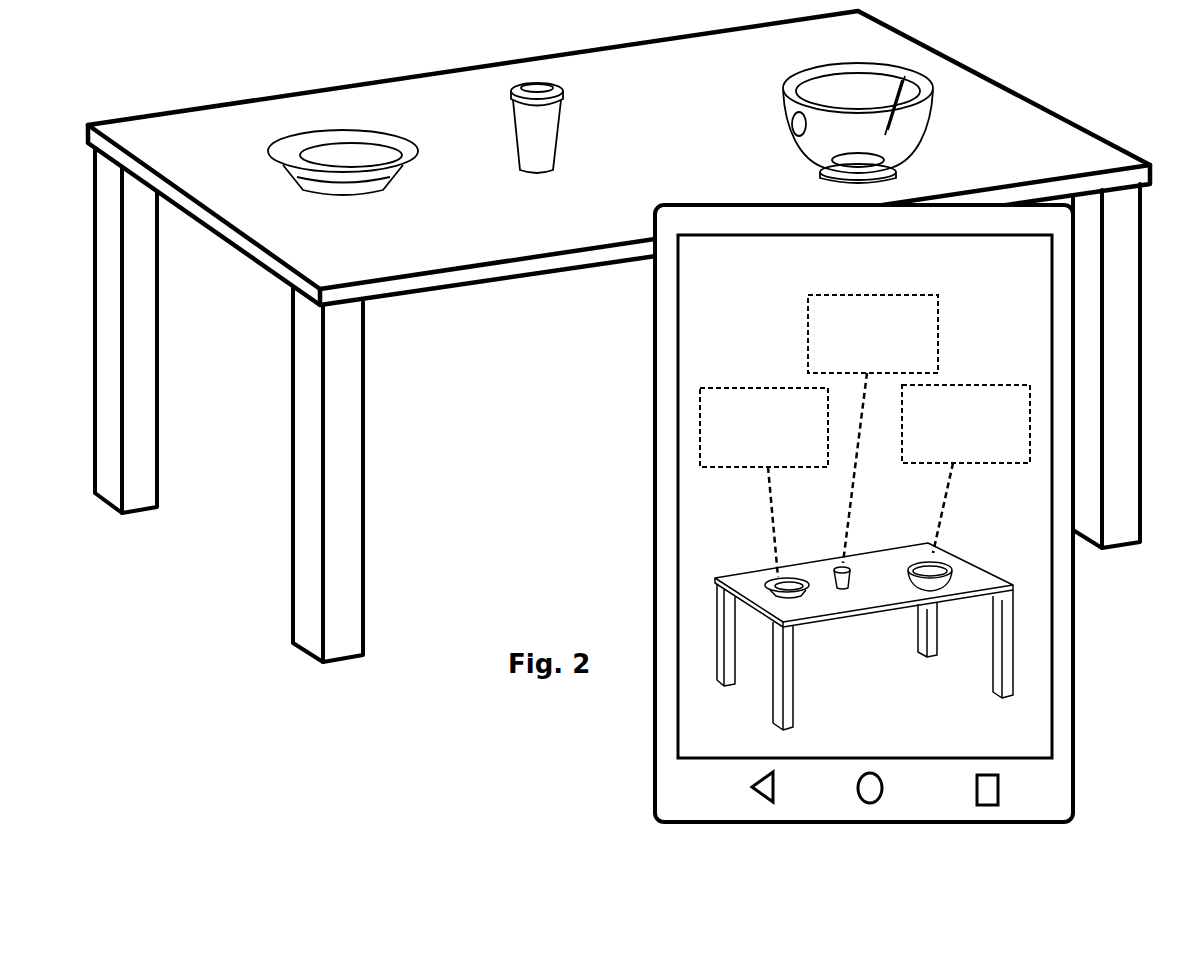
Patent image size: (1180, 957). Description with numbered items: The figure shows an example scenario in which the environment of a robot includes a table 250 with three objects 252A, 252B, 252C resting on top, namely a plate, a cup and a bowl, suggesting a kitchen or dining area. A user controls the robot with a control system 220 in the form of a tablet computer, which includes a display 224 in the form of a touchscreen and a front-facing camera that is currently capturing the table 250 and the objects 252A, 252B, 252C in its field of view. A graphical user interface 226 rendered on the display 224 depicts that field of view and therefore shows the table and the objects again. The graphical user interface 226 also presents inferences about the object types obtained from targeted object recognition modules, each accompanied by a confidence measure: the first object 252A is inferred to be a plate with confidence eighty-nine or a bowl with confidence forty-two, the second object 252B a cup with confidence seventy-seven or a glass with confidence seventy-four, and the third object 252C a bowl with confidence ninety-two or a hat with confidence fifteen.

The table 250 is at (1097, 114).
The first object 252A is at (423, 142).
The second object 252B is at (567, 149).
The third object 252C is at (932, 152).
The control system 220 is at (1075, 811).
The display 224 is at (1022, 271).
The graphical user interface 226 is at (980, 352).